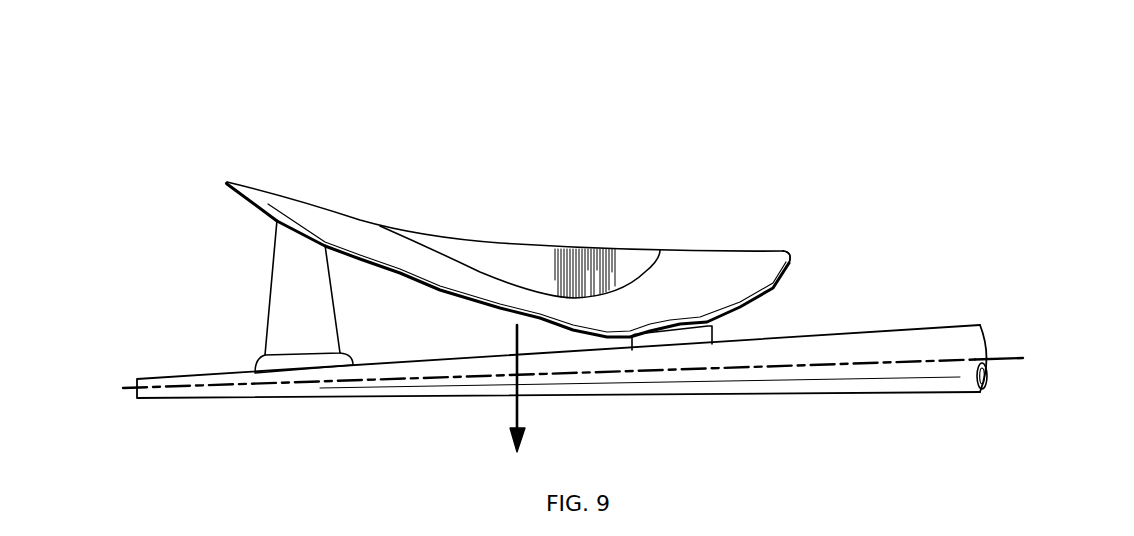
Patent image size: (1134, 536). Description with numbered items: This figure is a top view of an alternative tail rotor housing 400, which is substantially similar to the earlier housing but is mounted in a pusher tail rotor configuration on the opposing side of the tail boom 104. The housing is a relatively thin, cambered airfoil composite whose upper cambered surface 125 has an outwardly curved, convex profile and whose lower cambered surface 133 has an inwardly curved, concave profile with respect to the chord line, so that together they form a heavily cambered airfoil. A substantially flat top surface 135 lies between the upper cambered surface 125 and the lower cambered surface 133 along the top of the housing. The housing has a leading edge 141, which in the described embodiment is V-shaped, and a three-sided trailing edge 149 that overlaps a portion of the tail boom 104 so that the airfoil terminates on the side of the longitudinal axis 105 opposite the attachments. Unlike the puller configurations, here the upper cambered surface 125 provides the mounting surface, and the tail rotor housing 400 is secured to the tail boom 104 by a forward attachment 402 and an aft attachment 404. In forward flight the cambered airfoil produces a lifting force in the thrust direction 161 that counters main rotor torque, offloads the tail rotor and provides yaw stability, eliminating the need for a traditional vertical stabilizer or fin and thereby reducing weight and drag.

The tail rotor housing 400 is at (746, 122).
The trailing edge 149 is at (220, 178).
The lower cambered surface 133 is at (670, 249).
The top surface 135 is at (518, 263).
The leading edge 141 is at (795, 258).
The upper cambered surface 125 is at (774, 290).
The aft attachment 404 is at (271, 288).
The forward attachment 402 is at (714, 336).
The thrust direction 161 is at (515, 407).
The tail boom 104 is at (863, 395).
The longitudinal axis 105 is at (1003, 360).